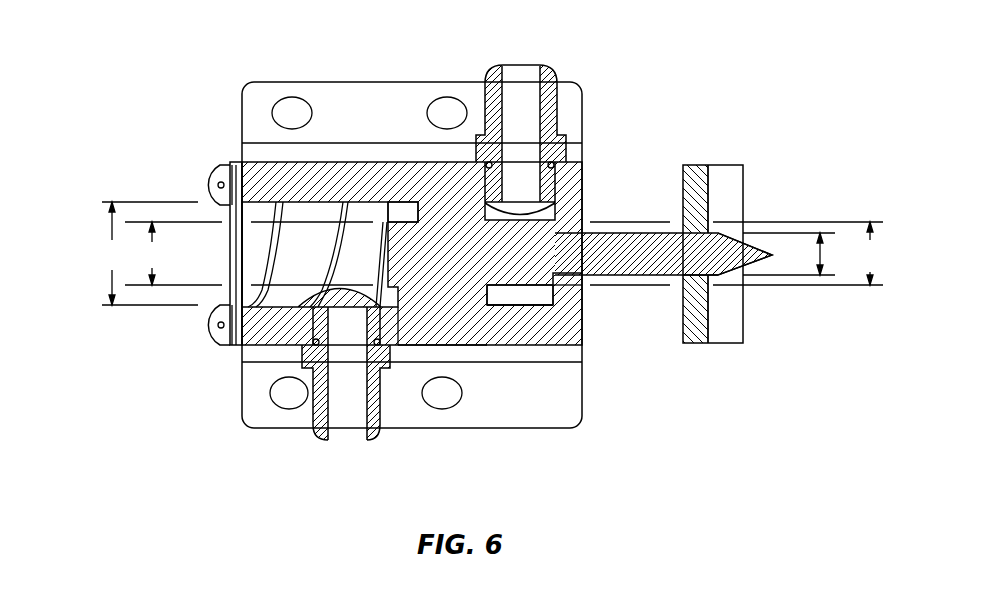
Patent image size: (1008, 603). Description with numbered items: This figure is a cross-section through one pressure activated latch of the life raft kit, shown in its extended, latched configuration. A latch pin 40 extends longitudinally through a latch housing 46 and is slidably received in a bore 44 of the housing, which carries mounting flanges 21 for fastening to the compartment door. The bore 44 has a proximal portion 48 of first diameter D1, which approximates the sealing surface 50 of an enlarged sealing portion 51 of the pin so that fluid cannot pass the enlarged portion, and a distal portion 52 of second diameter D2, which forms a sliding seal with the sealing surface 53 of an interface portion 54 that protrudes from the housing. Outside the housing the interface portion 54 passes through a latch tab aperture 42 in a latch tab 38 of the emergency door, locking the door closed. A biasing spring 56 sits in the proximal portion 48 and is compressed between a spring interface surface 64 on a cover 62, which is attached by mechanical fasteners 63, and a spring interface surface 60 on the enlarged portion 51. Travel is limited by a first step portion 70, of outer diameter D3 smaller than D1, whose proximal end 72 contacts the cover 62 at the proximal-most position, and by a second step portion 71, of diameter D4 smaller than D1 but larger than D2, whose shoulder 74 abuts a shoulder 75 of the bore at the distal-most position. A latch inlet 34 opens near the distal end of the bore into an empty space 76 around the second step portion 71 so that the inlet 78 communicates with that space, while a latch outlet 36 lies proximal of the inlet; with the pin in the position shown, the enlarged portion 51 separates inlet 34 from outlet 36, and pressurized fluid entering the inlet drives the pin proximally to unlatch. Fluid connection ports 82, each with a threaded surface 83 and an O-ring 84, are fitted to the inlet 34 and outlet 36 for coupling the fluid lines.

The mounting flange 21 is at (350, 82).
The latch inlet 34 is at (583, 197).
The latch outlet 36 is at (298, 356).
The latch tab 38 is at (708, 190).
The latch pin 40 is at (725, 257).
The latch tab aperture 42 is at (708, 273).
The bore 44 is at (225, 247).
The latch housing 46 is at (397, 200).
The proximal portion 48 is at (216, 316).
The sealing surface 50 is at (448, 162).
The enlarged sealing portion 51 is at (475, 243).
The distal portion 52 is at (583, 222).
The sealing surface 53 is at (648, 222).
The interface portion 54 is at (633, 296).
The biasing spring 56 is at (284, 248).
The spring interface surface 60 is at (436, 300).
The cover 62 is at (237, 230).
The mechanical fasteners 63 is at (214, 168).
The spring interface surface 64 is at (251, 238).
The first step portion 70 is at (405, 345).
The second step portion 71 is at (542, 303).
The proximal end 72 is at (383, 245).
The shoulder 74 is at (525, 283).
The shoulder 75 is at (563, 300).
The empty space 76 is at (515, 297).
The inlet 78 is at (490, 300).
The fluid connection port 82 is at (553, 88).
The threaded surface 83 is at (555, 163).
The O-ring 84 is at (560, 133).
The first diameter D1 is at (148, 253).
The second diameter D2 is at (818, 231).
The outer diameter D3 is at (173, 253).
The diameter D4 is at (736, 253).